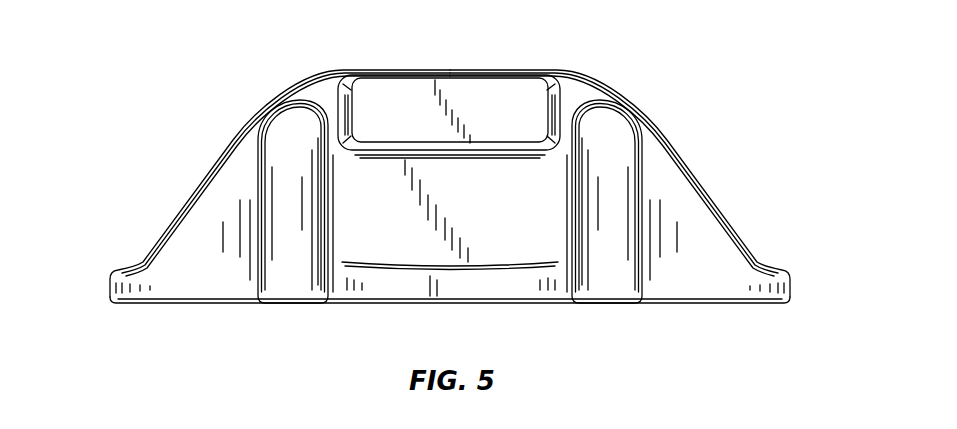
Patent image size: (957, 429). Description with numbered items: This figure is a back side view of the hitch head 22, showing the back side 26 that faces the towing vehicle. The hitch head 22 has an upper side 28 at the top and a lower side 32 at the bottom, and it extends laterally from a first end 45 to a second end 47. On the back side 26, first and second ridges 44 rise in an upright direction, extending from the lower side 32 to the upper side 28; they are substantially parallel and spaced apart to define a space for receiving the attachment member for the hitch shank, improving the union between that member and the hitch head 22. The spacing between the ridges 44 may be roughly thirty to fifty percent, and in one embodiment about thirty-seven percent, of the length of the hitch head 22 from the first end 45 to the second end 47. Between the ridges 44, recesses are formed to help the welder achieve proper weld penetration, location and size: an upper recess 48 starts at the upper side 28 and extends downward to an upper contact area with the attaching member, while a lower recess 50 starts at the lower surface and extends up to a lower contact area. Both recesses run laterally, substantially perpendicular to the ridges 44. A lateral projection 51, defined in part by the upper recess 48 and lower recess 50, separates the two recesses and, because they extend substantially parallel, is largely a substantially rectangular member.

The hitch head 22 is at (176, 223).
The back side 26 is at (668, 218).
The upper side 28 is at (387, 69).
The lower side 32 is at (218, 306).
The ridge 44 is at (290, 157).
The first end 45 is at (792, 285).
The second end 47 is at (110, 287).
The upper recess 48 is at (515, 112).
The lower recess 50 is at (506, 285).
The lateral projection 51 is at (397, 243).